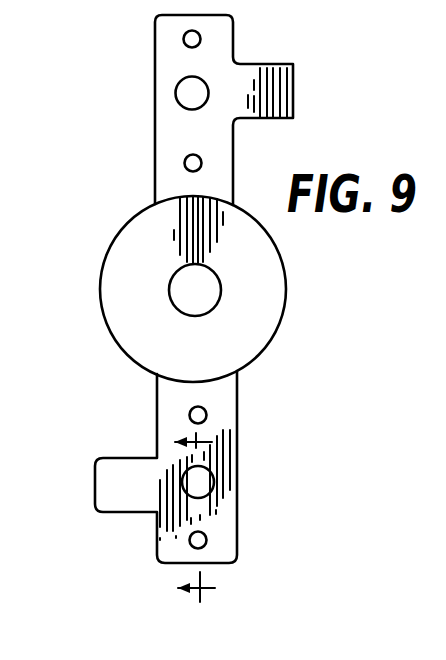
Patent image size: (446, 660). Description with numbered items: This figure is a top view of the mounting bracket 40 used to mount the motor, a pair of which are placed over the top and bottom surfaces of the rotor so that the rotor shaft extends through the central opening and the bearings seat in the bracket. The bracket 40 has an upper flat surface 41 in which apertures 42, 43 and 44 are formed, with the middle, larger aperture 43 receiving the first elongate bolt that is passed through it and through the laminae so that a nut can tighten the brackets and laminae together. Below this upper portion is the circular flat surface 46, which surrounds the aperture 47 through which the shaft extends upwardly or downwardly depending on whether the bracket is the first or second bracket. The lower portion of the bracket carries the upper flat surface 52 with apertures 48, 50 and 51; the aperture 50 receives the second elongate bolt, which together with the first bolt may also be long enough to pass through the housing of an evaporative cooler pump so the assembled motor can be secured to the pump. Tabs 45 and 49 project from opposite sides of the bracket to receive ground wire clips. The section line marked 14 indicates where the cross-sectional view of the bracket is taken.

The mounting bracket 40 is at (250, 42).
The upper flat surface 41 is at (163, 38).
The aperture 42 is at (178, 88).
The aperture 43 is at (183, 106).
The aperture 44 is at (185, 165).
The tab 45 is at (295, 84).
The circular flat surface 46 is at (152, 258).
The aperture 47 is at (180, 315).
The aperture 48 is at (189, 411).
The tab 49 is at (102, 480).
The aperture 50 is at (215, 480).
The aperture 51 is at (207, 543).
The upper flat surface 52 is at (167, 555).
The section line 14- 14 is at (188, 519).